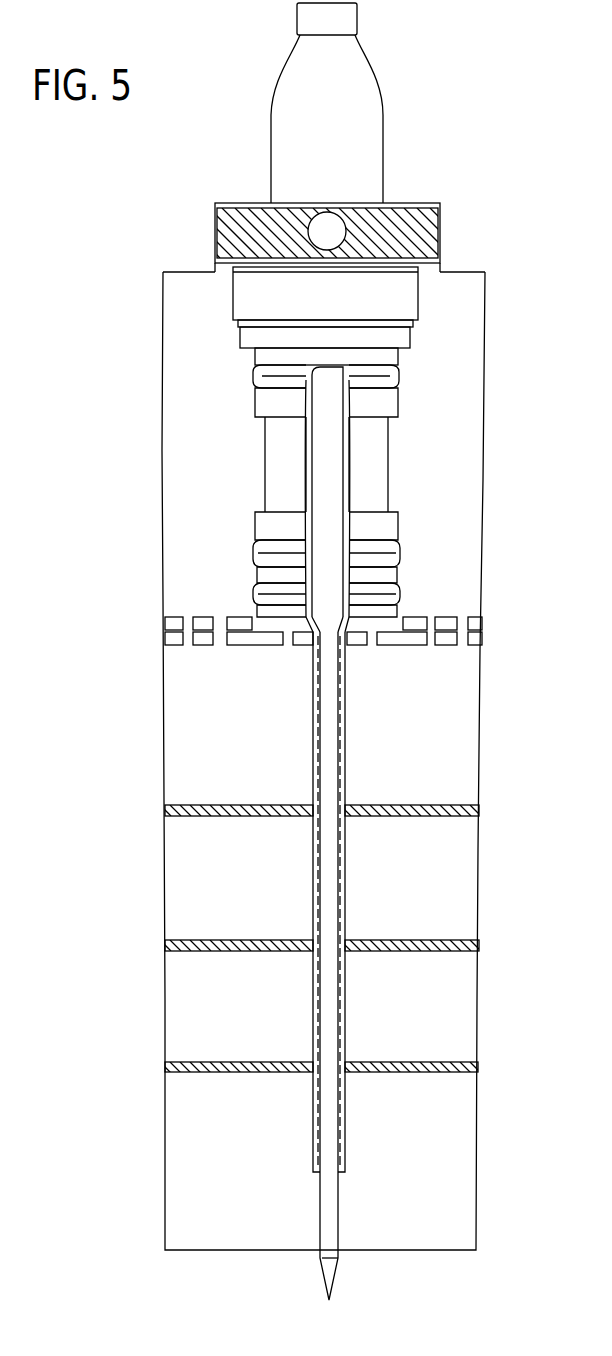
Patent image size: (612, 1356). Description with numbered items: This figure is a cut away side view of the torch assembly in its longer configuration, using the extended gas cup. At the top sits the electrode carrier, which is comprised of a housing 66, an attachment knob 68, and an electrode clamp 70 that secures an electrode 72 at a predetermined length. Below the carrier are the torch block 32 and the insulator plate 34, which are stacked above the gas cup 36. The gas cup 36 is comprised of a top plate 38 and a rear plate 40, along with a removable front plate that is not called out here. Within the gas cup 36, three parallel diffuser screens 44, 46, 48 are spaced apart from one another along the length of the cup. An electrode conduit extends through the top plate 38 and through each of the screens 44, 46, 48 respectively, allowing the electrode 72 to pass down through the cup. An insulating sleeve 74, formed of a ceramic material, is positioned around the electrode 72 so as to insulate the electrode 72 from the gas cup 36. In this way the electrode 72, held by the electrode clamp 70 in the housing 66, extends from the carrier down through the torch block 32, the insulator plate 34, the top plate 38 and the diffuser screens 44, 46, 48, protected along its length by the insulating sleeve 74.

The torch block 32 is at (473, 482).
The insulator plate 34 is at (483, 623).
The gas cup 36 is at (441, 853).
The top plate 38 is at (481, 642).
The rear plate 40 is at (417, 738).
The diffuser screen 44 is at (165, 805).
The diffuser screen 46 is at (165, 940).
The diffuser screen 48 is at (165, 1062).
The housing 66 is at (272, 477).
The attachment knob 68 is at (215, 237).
The electrode clamp 70 is at (338, 480).
The electrode 72 is at (322, 888).
The insulating sleeve 74 is at (345, 858).